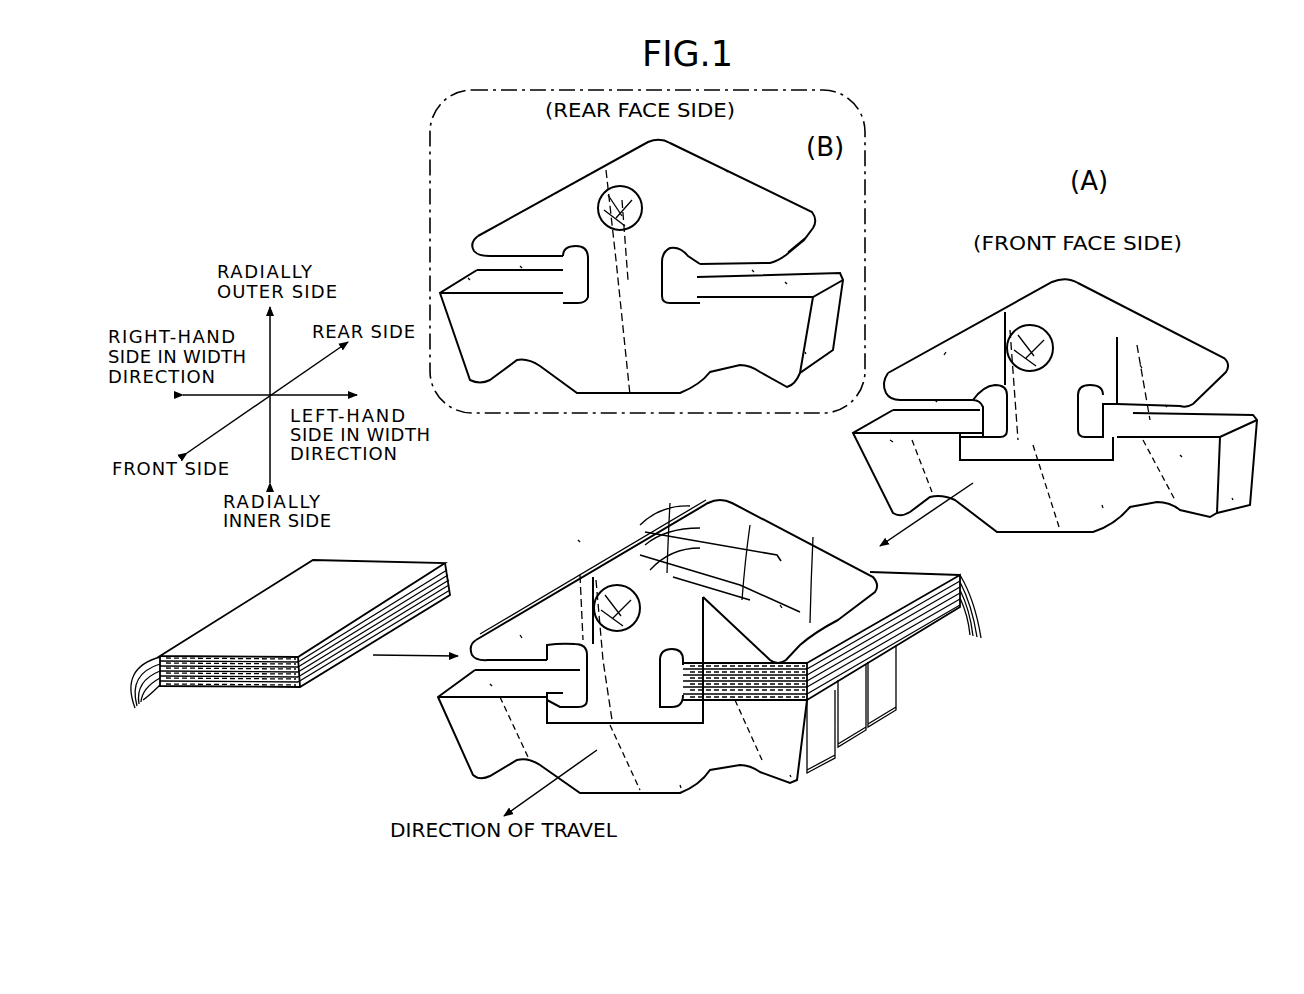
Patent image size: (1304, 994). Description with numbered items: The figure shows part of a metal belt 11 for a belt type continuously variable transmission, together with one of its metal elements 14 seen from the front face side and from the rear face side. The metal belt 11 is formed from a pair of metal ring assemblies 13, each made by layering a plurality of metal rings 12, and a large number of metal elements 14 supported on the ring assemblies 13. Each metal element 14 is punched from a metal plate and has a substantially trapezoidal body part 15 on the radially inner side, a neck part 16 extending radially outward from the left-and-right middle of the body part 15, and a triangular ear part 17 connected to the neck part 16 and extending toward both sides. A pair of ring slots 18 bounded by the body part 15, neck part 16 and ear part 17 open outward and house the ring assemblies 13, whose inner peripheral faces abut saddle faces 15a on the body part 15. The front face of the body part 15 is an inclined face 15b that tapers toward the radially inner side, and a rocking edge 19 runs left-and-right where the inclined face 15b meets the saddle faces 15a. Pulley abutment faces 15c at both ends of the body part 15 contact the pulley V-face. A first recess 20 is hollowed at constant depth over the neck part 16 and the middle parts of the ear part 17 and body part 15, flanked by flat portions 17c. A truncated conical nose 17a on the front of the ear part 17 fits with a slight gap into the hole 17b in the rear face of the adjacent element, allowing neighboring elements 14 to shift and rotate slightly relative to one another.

The metal belt 11 is at (580, 542).
The metal ring 12 is at (561, 654).
The metal ring assembly 13 is at (236, 604).
The metal element 14 is at (722, 148).
The body part 15 is at (684, 398).
The saddle face 15a is at (468, 280).
The inclined face 15b is at (1103, 506).
The pulley abutment face 15c is at (806, 353).
The neck part 16 is at (642, 272).
The ear part 17 is at (555, 178).
The nose 17a is at (640, 628).
The hole 17b is at (613, 192).
The flat portion 17c is at (945, 352).
The ring slot 18 is at (521, 266).
The rocking edge 19 is at (913, 445).
The first recess 20 is at (727, 171).